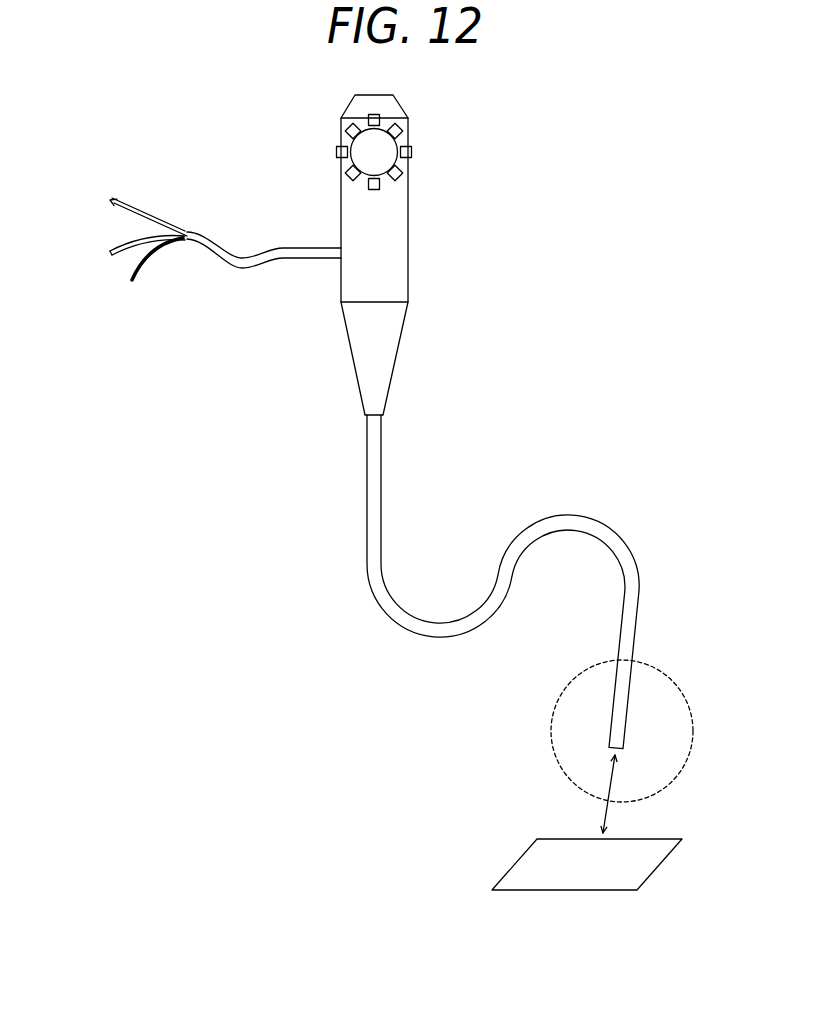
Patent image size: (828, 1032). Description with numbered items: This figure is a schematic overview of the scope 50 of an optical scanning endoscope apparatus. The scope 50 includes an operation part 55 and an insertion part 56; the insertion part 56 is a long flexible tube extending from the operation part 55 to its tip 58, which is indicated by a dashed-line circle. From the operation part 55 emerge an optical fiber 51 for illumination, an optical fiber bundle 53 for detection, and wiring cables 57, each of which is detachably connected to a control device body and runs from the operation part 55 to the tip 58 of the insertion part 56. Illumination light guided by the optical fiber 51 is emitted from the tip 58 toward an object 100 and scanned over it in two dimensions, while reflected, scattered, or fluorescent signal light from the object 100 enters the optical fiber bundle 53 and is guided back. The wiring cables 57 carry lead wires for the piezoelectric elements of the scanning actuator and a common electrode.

The scope 50 is at (558, 275).
The optical fiber for illumination 51 is at (126, 240).
The optical fiber bundle for detection 53 is at (141, 208).
The operation part 55 is at (393, 222).
The insertion part 56 is at (628, 552).
The wiring cables 57 is at (138, 268).
The tip 58 is at (552, 725).
The object 100 is at (535, 867).